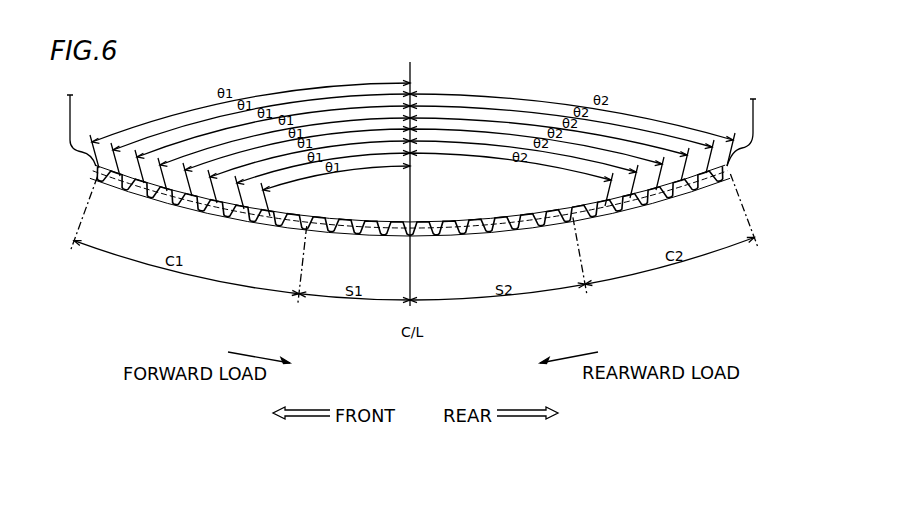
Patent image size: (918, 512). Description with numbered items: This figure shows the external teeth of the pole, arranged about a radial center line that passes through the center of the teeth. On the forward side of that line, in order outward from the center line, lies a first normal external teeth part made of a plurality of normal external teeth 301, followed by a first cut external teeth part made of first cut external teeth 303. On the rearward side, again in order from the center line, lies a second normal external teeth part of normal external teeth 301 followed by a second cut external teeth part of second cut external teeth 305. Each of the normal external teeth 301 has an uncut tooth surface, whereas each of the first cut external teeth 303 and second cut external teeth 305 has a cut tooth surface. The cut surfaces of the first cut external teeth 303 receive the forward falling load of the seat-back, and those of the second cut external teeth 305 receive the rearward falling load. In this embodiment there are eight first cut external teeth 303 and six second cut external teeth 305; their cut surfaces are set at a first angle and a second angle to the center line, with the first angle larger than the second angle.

The normal external teeth 301 is at (333, 229).
The first cut external teeth 303 is at (176, 198).
The second cut external teeth 305 is at (627, 202).